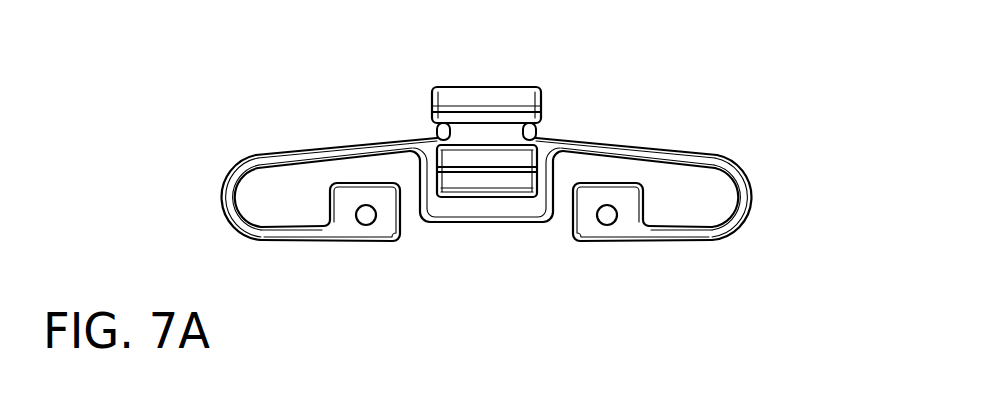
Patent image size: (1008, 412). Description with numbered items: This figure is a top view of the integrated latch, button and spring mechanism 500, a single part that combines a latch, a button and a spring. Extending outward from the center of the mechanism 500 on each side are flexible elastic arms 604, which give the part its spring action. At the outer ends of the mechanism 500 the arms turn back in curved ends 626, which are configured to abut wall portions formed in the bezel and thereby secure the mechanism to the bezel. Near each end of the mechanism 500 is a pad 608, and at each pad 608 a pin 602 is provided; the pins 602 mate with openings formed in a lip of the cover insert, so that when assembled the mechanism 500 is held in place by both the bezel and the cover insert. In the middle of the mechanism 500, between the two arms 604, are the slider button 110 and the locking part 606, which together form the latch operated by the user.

The integrated latch, button and spring mechanism 500 is at (177, 53).
The elastic arms 604 is at (285, 149).
The curved ends 626 is at (217, 192).
The pads 608 is at (385, 227).
The pins 602 is at (366, 216).
The locking part 606 is at (493, 87).
The slider button 110 is at (510, 167).